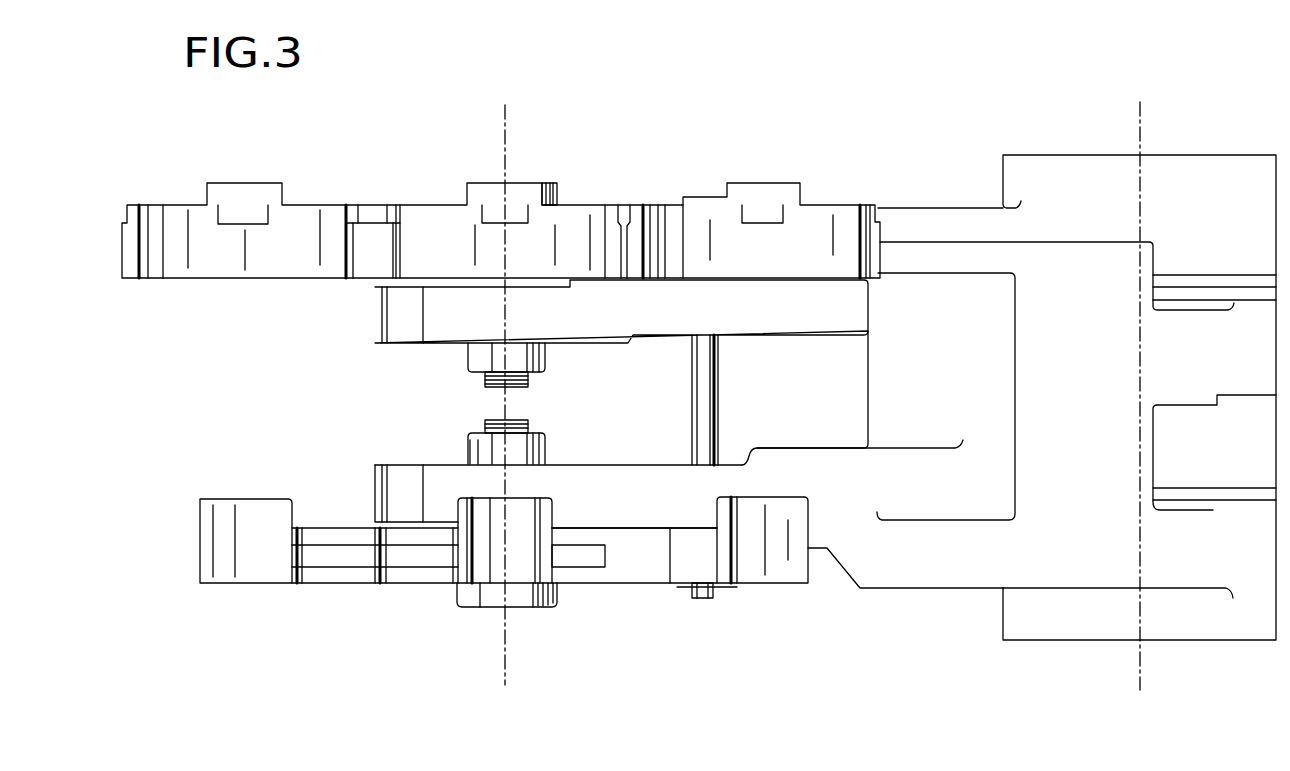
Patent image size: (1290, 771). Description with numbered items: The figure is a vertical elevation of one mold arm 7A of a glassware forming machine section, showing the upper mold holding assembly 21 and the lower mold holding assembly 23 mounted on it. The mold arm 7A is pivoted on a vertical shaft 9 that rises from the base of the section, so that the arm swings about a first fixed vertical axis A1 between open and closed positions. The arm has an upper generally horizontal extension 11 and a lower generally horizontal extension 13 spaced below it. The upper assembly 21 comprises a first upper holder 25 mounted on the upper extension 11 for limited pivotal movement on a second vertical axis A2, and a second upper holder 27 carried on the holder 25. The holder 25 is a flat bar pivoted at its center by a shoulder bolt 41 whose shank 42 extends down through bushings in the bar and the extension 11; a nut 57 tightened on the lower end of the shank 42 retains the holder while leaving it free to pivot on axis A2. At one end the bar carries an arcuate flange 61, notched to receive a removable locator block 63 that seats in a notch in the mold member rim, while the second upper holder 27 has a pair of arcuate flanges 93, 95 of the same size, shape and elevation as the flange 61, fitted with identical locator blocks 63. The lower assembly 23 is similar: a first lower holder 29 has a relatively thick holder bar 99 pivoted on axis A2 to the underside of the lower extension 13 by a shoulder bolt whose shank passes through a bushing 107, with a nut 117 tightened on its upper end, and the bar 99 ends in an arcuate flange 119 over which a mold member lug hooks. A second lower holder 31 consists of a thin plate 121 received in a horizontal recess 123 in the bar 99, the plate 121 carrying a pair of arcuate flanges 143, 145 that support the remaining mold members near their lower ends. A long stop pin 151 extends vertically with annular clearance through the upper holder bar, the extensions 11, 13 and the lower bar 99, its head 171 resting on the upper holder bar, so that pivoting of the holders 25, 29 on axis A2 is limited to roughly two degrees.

The vertical shaft 9 is at (1236, 152).
The first mold arm 7A is at (943, 227).
The upper extension 11 is at (598, 343).
The lower extension 13 is at (585, 462).
The upper mold holding assembly 21 is at (600, 130).
The lower mold holding assembly 23 is at (638, 646).
The first upper holder 25 is at (657, 202).
The second upper holder 27 is at (501, 208).
The first lower holder 29 is at (777, 584).
The second lower holder 31 is at (375, 594).
The shoulder bolt 41 is at (556, 189).
The shank 42 is at (486, 381).
The nut 57 is at (534, 373).
The arcuate flange 61 is at (837, 202).
The locator block 63 is at (256, 182).
The arcuate flange 93 is at (288, 218).
The arcuate flange 95 is at (594, 207).
The holder bar 99 is at (623, 528).
The bushing 107 is at (530, 428).
The nut 117 is at (470, 452).
The arcuate flange 119 is at (778, 579).
The plate 121 is at (435, 558).
The horizontal recess 123 is at (585, 552).
The arcuate flange 143 is at (223, 584).
The arcuate flange 145 is at (557, 604).
The stop pin 151 is at (718, 402).
The head 171 is at (727, 598).
The first vertical axis A1 is at (1146, 142).
The second vertical axis A2 is at (512, 130).